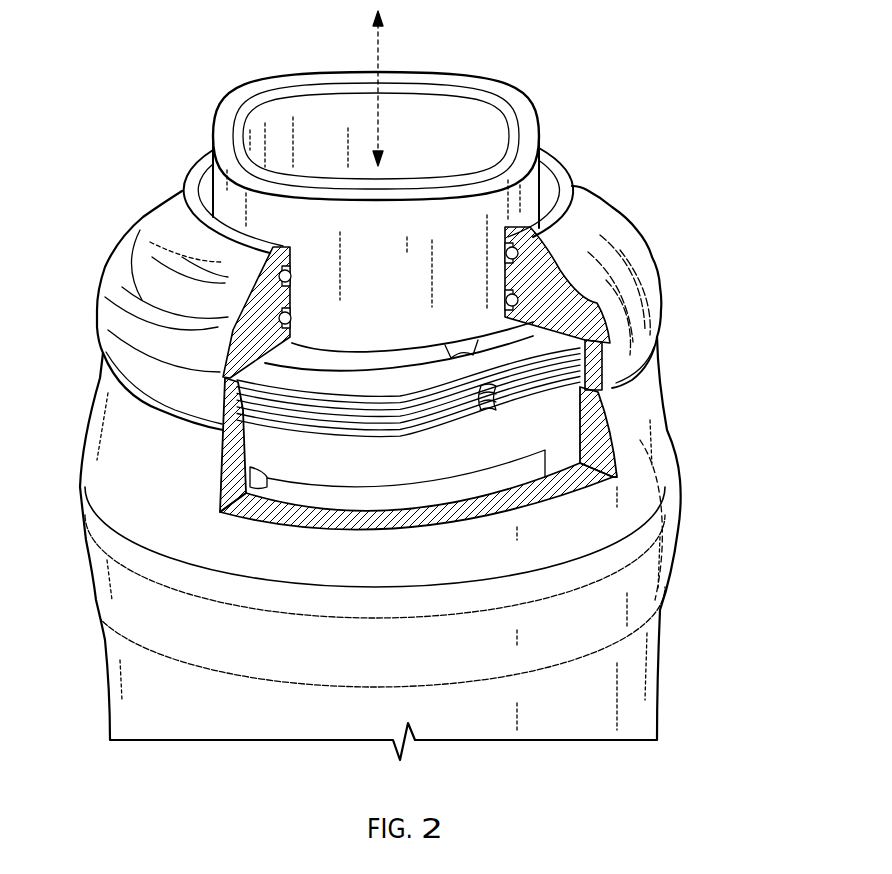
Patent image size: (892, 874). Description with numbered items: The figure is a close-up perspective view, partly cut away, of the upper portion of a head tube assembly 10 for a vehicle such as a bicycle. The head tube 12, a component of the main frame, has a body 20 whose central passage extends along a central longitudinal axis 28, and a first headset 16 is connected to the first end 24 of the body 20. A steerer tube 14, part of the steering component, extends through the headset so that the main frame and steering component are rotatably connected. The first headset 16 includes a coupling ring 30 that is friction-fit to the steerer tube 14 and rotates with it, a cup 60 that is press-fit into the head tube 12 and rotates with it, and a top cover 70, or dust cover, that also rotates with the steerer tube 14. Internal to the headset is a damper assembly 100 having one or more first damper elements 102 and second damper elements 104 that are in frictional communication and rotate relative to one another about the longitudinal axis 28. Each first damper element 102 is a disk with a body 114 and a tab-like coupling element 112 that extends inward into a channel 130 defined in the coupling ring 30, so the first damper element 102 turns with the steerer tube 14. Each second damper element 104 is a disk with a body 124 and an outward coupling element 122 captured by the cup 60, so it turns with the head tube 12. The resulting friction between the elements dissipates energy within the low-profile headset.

The head tube assembly 10 is at (76, 156).
The head tube 12 is at (104, 606).
The steerer tube 14 is at (515, 179).
The first headset 16 is at (382, 286).
The body 20 is at (650, 583).
The first end 24 is at (124, 408).
The central longitudinal axis 28 is at (382, 50).
The coupling ring 30 is at (400, 340).
The cup 60 is at (606, 378).
The top cover 70 is at (641, 285).
The damper assembly 100 is at (420, 437).
The first damper elements 102 is at (349, 383).
The second damper elements 104 is at (395, 412).
The coupling element 112 is at (447, 347).
The body 114 is at (510, 357).
The coupling element 122 is at (483, 420).
The body 124 is at (455, 417).
The channel 130 is at (467, 341).